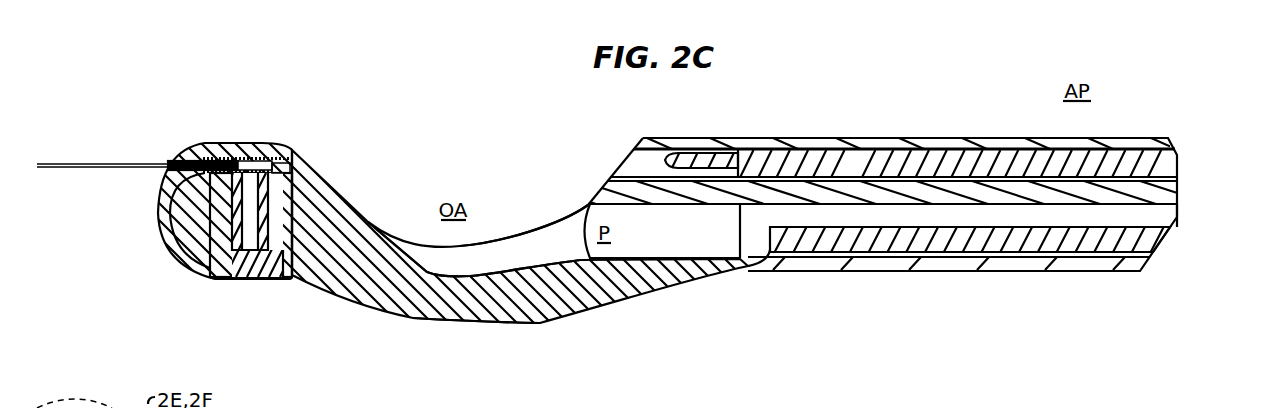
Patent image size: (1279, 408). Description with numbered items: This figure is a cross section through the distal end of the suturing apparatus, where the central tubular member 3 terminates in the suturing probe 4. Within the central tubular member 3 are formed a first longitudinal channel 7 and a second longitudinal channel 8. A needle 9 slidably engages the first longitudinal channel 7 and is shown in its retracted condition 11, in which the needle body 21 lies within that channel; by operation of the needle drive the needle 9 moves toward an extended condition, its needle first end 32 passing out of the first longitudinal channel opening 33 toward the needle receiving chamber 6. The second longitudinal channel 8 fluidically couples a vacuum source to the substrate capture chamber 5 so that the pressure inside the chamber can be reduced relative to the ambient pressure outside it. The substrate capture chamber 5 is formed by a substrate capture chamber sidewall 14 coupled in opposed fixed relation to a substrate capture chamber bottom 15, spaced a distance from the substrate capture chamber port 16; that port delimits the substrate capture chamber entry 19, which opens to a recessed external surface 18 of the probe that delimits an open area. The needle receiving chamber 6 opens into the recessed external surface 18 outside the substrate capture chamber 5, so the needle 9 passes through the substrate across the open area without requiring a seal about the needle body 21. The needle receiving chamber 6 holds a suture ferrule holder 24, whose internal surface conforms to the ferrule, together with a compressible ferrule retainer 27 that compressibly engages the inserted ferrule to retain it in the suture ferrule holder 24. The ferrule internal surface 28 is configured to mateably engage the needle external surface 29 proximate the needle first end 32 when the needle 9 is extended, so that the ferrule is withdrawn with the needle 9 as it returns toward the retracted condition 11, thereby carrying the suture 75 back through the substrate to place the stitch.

The suture 75 is at (62, 168).
The suturing probe 4 is at (131, 132).
The suture ferrule holder 24 is at (194, 146).
The needle receiving chamber 6 is at (235, 146).
The ferrule internal surface 28 is at (257, 160).
The compressible ferrule retainer 27 is at (232, 224).
The recessed external surface 18 is at (338, 186).
The substrate capture chamber port 16 is at (390, 218).
The substrate capture chamber entry 19 is at (510, 243).
The substrate capture chamber 5 is at (524, 267).
The substrate capture chamber sidewall 14 is at (402, 258).
The substrate capture chamber bottom 15 is at (491, 278).
The first longitudinal channel opening 33 is at (622, 156).
The needle first end 32 is at (668, 157).
The needle external surface 29 is at (827, 150).
The needle body 21 is at (930, 165).
The central tubular member 3 is at (1002, 131).
The needle 9 is at (1108, 154).
The retracted condition 11 is at (892, 133).
The second longitudinal channel 8 is at (1191, 153).
The first longitudinal channel 7 is at (1186, 217).